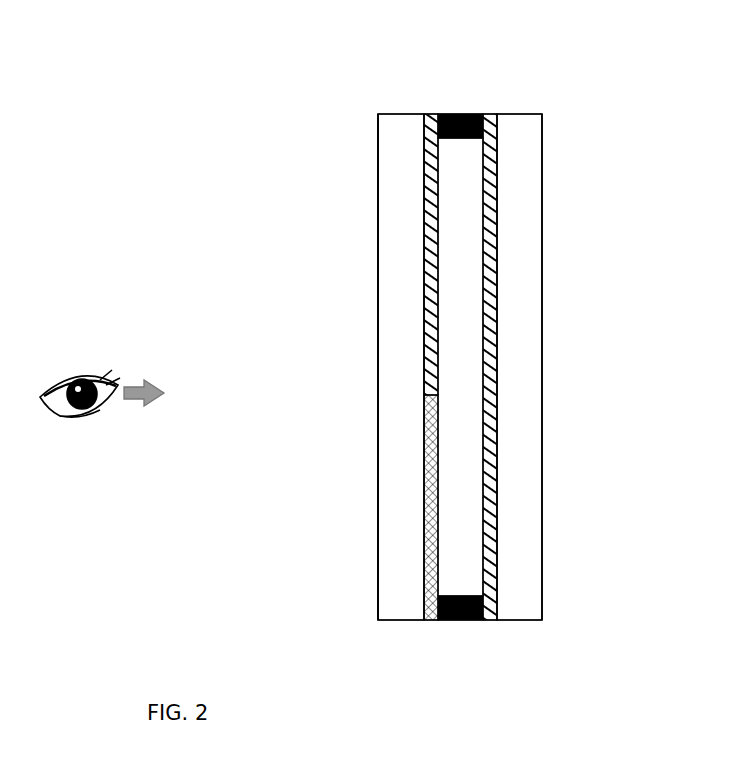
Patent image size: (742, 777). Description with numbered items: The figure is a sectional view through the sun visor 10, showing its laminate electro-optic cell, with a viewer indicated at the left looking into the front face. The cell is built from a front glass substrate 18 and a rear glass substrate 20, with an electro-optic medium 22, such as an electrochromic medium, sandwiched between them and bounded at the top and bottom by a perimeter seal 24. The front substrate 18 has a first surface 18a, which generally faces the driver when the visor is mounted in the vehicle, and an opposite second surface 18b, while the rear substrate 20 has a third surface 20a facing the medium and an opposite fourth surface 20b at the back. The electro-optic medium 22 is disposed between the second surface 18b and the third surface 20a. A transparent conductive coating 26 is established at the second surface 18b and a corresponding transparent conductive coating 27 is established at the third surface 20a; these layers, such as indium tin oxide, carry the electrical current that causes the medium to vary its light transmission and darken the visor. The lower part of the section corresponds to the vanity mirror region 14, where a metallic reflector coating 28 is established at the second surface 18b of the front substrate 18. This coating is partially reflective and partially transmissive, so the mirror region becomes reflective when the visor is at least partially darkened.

The sun visor 10 is at (300, 86).
The vanity mirror region 14 is at (334, 494).
The front glass substrate 18 is at (350, 195).
The first surface 18a is at (378, 268).
The second surface 18b is at (427, 313).
The rear glass substrate 20 is at (585, 219).
The third surface 20a is at (497, 310).
The fourth surface 20b is at (543, 367).
The electro-optic medium 22 is at (470, 186).
The perimeter seal 24 is at (459, 114).
The transparent conductive coating 26 is at (422, 363).
The transparent conductive coating 27 is at (497, 468).
The metallic reflector coating 28 is at (427, 538).